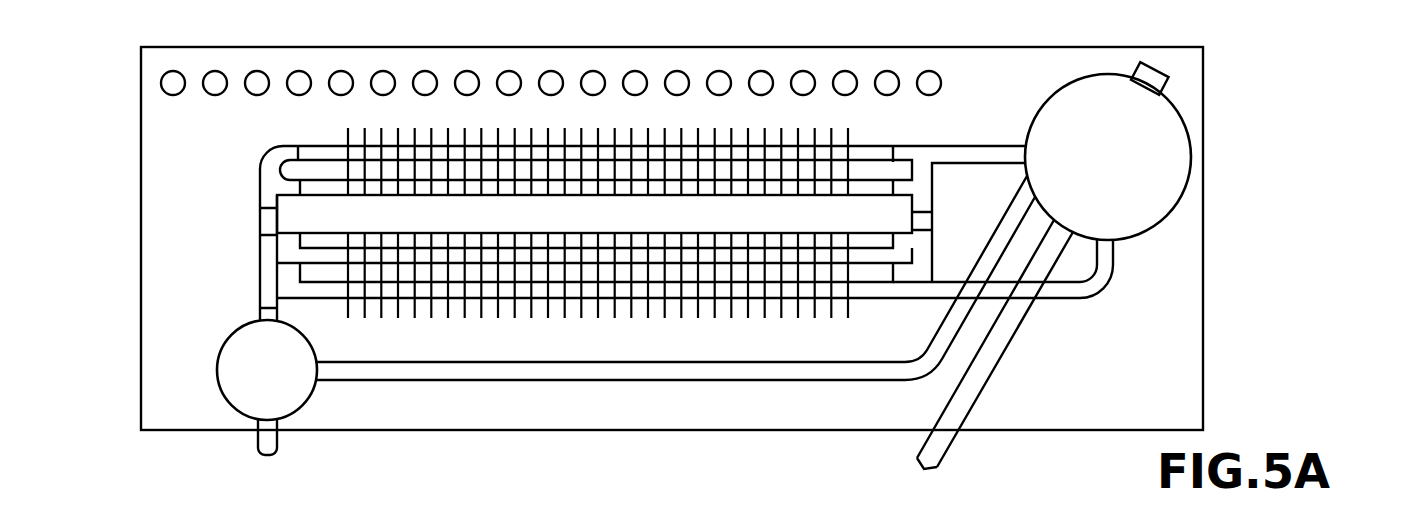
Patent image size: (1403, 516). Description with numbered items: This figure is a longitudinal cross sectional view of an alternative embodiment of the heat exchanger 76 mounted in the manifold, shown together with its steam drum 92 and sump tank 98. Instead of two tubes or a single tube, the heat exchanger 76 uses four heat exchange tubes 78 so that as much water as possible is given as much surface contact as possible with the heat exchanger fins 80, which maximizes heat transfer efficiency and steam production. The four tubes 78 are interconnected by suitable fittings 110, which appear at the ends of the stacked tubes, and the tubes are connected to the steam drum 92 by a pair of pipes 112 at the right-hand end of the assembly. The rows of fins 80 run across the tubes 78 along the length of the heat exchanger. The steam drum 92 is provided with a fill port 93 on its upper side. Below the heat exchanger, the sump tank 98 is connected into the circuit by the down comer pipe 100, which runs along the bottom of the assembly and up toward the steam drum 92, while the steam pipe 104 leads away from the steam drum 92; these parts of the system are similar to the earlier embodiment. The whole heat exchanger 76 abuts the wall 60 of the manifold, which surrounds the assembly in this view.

The wall 60 is at (1203, 263).
The heat exchanger 76 is at (512, 333).
The heat exchange tubes 78 is at (868, 165).
The fins 80 is at (693, 138).
The steam drum 92 is at (1124, 146).
The fill port 93 is at (1163, 73).
The sump tank 98 is at (283, 380).
The down comer pipe 100 is at (697, 380).
The steam pipe 104 is at (1004, 350).
The fittings 110 is at (270, 187).
The pipes 112 is at (960, 282).